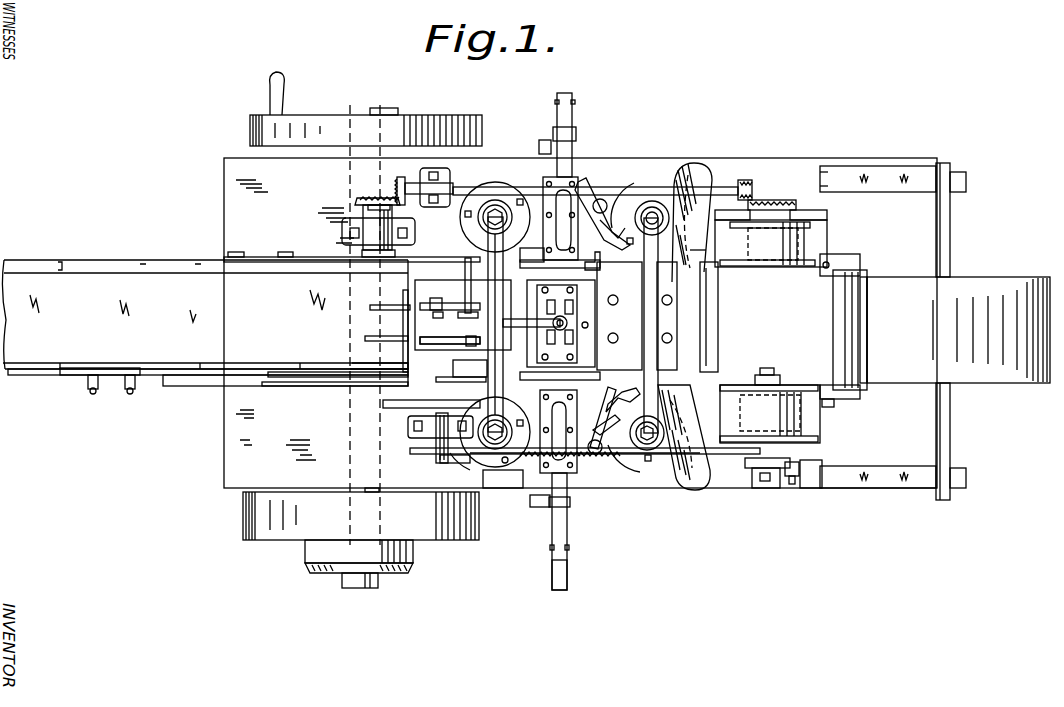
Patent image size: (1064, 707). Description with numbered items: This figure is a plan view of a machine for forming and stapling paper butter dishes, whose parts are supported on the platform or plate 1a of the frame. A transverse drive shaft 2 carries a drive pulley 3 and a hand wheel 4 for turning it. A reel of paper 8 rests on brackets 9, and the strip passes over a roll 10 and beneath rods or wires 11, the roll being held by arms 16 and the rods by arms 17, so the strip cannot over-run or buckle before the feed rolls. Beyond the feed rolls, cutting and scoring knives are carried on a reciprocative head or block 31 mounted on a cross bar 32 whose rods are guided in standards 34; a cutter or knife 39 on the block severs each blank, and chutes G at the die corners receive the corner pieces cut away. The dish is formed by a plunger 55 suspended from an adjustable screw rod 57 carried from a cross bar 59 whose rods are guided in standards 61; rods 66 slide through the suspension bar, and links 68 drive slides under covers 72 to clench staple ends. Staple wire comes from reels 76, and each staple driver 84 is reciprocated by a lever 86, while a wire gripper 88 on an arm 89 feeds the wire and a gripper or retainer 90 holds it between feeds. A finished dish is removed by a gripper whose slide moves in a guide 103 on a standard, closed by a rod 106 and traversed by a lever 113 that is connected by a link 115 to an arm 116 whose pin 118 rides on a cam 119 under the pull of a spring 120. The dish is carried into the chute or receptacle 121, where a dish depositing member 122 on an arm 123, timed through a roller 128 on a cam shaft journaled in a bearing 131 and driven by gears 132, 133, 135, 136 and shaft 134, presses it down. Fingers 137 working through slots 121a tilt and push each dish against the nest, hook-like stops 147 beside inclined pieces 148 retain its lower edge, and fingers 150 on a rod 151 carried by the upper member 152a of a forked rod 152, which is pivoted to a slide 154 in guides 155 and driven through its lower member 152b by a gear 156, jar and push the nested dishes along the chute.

The platform or plate 1a is at (580, 325).
The drive shaft 2 is at (365, 588).
The drive pulley 3 is at (280, 540).
The hand wheel 4 is at (427, 122).
The reel of paper 8 is at (958, 330).
The brackets 9 is at (893, 180).
The roll 10 is at (855, 332).
The rods or wires 11 is at (858, 285).
The arms 16 is at (860, 395).
The arms 17 is at (835, 405).
The reciprocative head or block 31 is at (838, 262).
The cross bar 32 is at (705, 247).
The standards 34 is at (645, 460).
The cutter or knife 39 is at (599, 253).
The plunger 55 is at (528, 262).
The adjustable screw rod 57 is at (567, 320).
The cross bar 59 is at (488, 258).
The standards 61 is at (475, 205).
The rods 66 is at (577, 325).
The links 68 is at (556, 308).
The covers 72 is at (543, 372).
The reels 76 is at (815, 222).
The staple driver 84 is at (568, 148).
The lever 86 is at (558, 562).
The wire gripper 88 is at (610, 395).
The arm 89 is at (605, 198).
The wire gripper or retainer 90 is at (604, 414).
The guide 103 is at (385, 404).
The rod 106 is at (475, 448).
The lever 113 is at (436, 440).
The link 115 is at (495, 455).
The arm 116 is at (808, 478).
The pin or roller 118 is at (792, 476).
The cam 119 is at (750, 466).
The spring 120 is at (515, 480).
The chute or receptacle 121 is at (205, 314).
The slots 121a is at (445, 350).
The dish depositing member 122 is at (461, 323).
The arm 123 is at (312, 254).
The roller or projection 128 is at (286, 252).
The bearing 131 is at (368, 224).
The gear 132 is at (384, 198).
The gear 133 is at (400, 178).
The shaft 134 is at (525, 184).
The gear 135 is at (748, 182).
The gear 136 is at (780, 200).
The fingers 137 is at (476, 303).
The hook-like stops 147 is at (432, 314).
The inclined pieces 148 is at (461, 378).
The fingers or pins 150 is at (386, 335).
The rod 151 is at (400, 340).
The forked rod 152 is at (197, 388).
The upper member 152a is at (288, 386).
The lower member 152b is at (332, 390).
The slide 154 is at (150, 380).
The guides 155 is at (90, 390).
The gear 156 is at (359, 356).
The chutes G is at (698, 185).